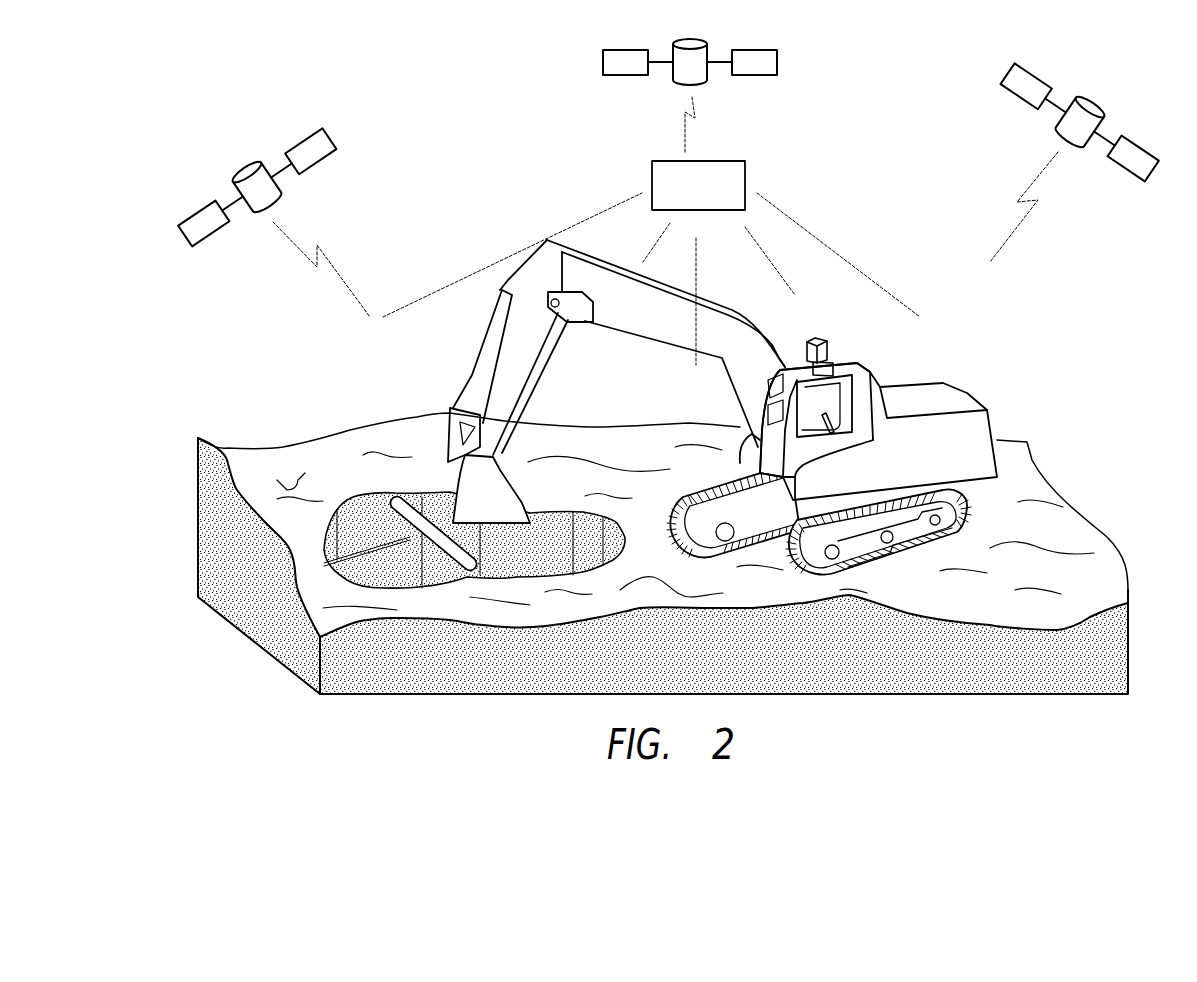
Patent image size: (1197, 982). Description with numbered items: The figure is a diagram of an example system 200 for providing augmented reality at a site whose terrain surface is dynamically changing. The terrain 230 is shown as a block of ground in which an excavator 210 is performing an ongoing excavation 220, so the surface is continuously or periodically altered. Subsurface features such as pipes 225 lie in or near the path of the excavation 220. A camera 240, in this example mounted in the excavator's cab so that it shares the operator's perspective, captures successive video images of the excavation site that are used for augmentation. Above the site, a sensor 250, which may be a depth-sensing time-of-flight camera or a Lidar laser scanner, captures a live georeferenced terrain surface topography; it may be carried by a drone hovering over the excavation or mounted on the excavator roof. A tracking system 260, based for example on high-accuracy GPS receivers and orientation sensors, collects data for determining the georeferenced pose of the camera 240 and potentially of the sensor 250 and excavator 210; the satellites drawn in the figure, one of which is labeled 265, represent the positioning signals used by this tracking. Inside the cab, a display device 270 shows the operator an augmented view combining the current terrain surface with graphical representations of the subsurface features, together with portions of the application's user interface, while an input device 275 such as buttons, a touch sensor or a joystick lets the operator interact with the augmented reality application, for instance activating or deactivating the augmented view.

The system 200 is at (473, 102).
The excavator 210 is at (993, 417).
The excavation 220 is at (438, 490).
The pipes 225 is at (392, 499).
The terrain 230 is at (297, 480).
The camera 240 is at (833, 362).
The sensor 250 is at (745, 167).
The tracking system 260 is at (823, 340).
The satellite 265 is at (1090, 98).
The display device 270 is at (760, 373).
The input device 275 is at (824, 414).